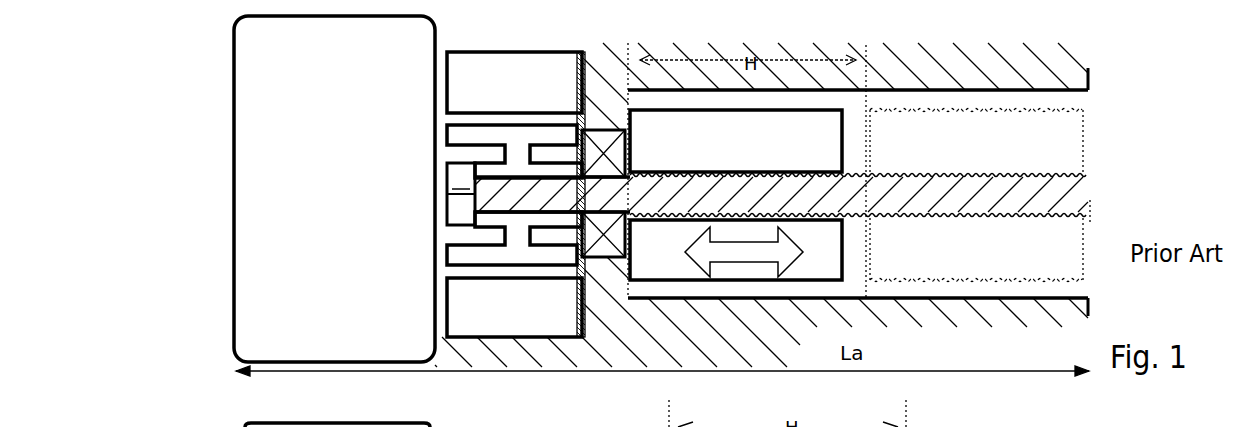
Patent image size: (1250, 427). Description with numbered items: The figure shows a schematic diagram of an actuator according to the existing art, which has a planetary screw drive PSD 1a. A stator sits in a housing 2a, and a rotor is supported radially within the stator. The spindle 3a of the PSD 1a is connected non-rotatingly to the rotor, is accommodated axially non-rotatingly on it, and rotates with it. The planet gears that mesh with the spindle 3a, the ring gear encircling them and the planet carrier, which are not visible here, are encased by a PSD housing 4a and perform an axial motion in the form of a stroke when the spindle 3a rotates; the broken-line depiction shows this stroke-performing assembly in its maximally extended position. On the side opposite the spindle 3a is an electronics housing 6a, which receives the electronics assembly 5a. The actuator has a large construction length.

The planetary screw drive (PSD) 1a is at (736, 195).
The housing 2a is at (1048, 78).
The spindle 3a is at (1093, 168).
The PSD housing 4a is at (842, 122).
The electronics assembly 5a is at (326, 99).
The electronics housing 6a is at (228, 152).